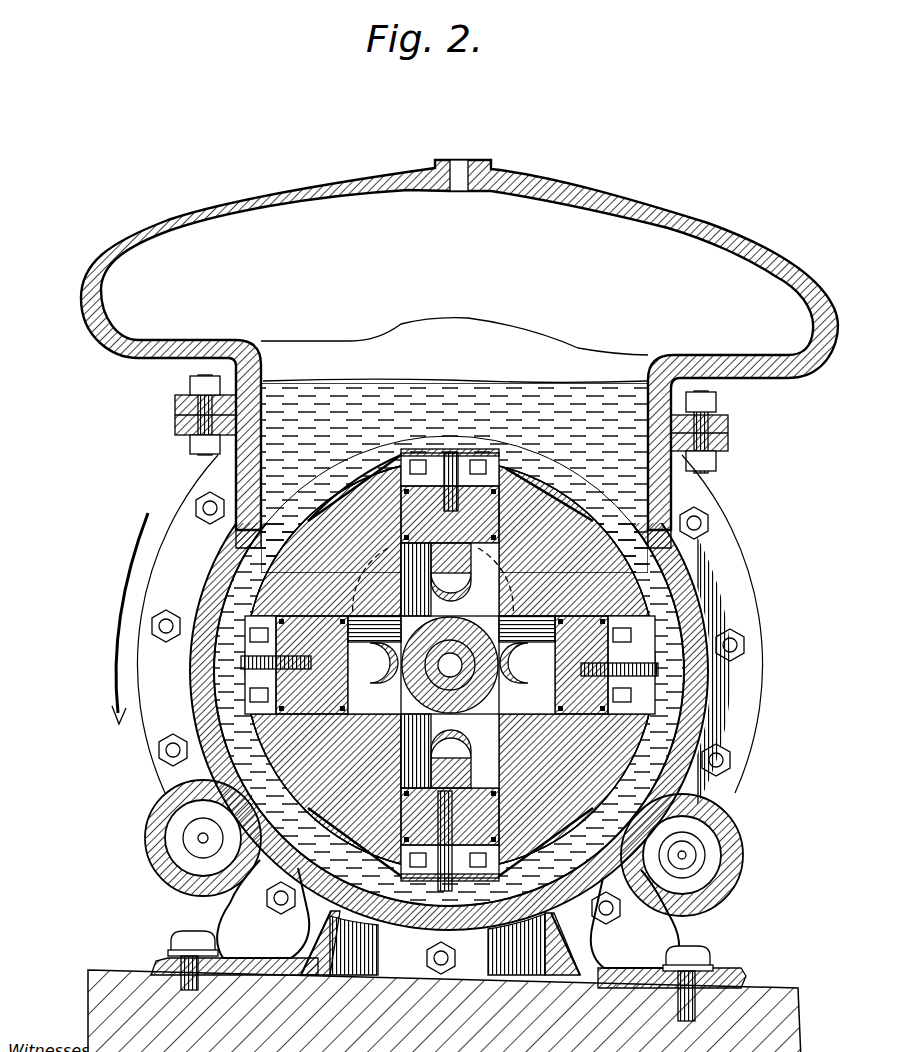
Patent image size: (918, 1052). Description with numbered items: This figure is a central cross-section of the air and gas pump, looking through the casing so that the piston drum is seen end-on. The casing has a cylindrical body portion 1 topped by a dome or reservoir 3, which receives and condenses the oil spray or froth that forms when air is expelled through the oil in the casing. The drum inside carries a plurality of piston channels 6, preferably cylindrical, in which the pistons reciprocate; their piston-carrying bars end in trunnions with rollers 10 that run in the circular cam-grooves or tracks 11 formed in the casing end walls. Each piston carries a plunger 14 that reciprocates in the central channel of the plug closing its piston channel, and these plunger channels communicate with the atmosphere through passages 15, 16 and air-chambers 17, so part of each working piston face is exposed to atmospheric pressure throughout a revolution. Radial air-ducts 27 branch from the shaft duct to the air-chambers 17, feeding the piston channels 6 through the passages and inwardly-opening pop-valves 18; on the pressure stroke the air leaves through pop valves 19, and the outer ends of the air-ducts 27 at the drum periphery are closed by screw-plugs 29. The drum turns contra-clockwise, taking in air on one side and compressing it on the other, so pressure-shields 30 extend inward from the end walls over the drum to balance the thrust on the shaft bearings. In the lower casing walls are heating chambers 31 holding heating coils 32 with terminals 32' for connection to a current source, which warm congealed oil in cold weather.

The cylindrical body portion 1 is at (451, 150).
The dome or reservoir 3 is at (285, 182).
The piston channels 6 is at (445, 665).
The rollers 10 is at (450, 665).
The cam-grooves or tracks 11 is at (374, 665).
The plunger 14 is at (456, 841).
The passages 15 is at (632, 640).
The passages 16 is at (728, 520).
The air-chambers 17 is at (450, 665).
The inwardly-opening pop-valves 18 is at (243, 688).
The pop valves 19 is at (243, 627).
The radial air-ducts 27 is at (433, 582).
The screw-plugs 29 is at (293, 503).
The pressure-shields 30 is at (397, 877).
The heating chambers 31 is at (160, 835).
The heating coils 32 is at (462, 867).
The terminals 32' is at (466, 885).